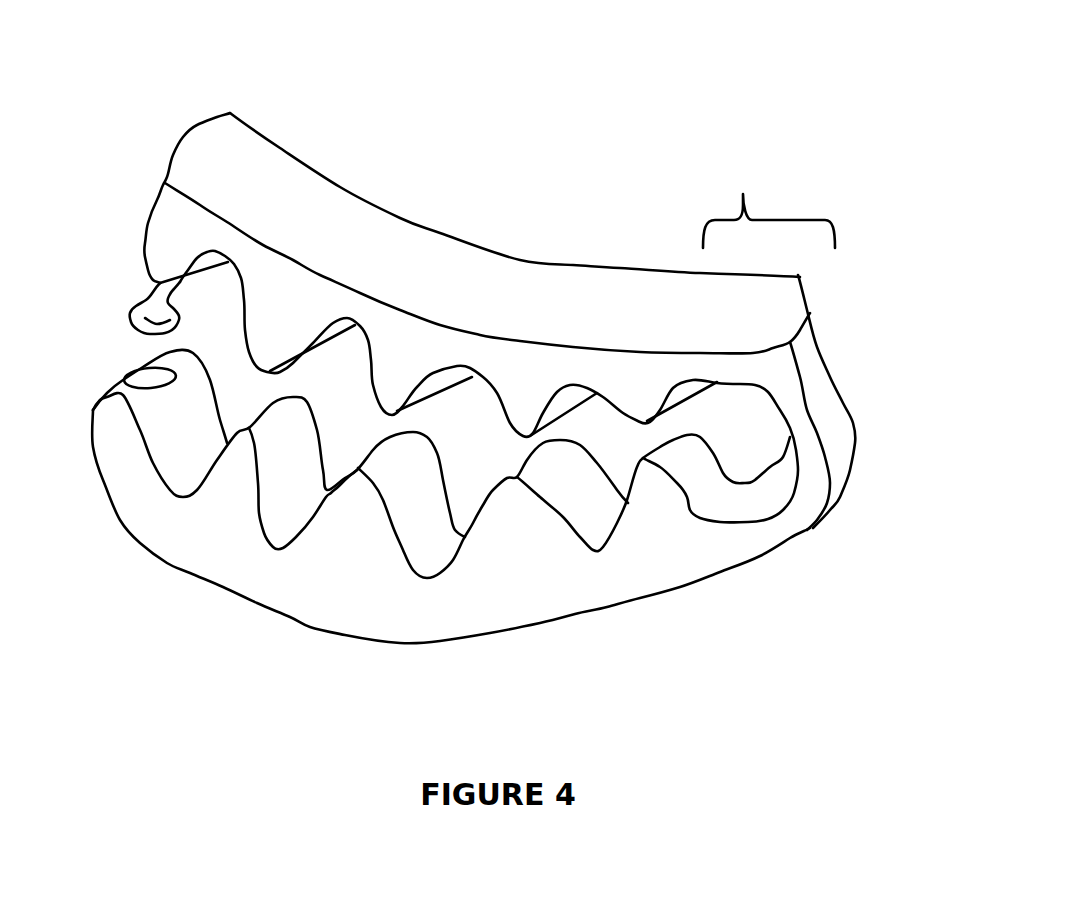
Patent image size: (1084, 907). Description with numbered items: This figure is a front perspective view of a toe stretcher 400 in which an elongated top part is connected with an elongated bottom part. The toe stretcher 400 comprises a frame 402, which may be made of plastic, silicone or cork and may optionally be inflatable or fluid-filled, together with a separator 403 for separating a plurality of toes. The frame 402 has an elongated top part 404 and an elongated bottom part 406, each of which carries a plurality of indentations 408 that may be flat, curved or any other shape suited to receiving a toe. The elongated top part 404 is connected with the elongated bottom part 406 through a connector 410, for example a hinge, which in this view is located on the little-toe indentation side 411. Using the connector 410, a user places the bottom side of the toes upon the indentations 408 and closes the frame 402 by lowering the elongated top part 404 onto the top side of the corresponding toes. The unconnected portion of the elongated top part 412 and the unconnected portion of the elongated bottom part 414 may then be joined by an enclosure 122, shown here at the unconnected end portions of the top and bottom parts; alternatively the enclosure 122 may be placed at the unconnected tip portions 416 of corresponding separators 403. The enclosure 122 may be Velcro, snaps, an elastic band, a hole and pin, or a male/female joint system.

The toe stretcher 400 is at (513, 163).
The frame 402 is at (838, 512).
The separator 403 is at (290, 333).
The elongated top part 404 is at (537, 293).
The elongated bottom part 406 is at (720, 543).
The indentations 408 is at (588, 513).
The connector 410 is at (803, 434).
The little-toe indentation side 411 is at (769, 207).
The unconnected portion of the elongated top part 412 is at (158, 253).
The unconnected portion of the elongated bottom part 414 is at (122, 435).
The unconnected tip portions 416 is at (261, 370).
The enclosure 122 is at (135, 367).